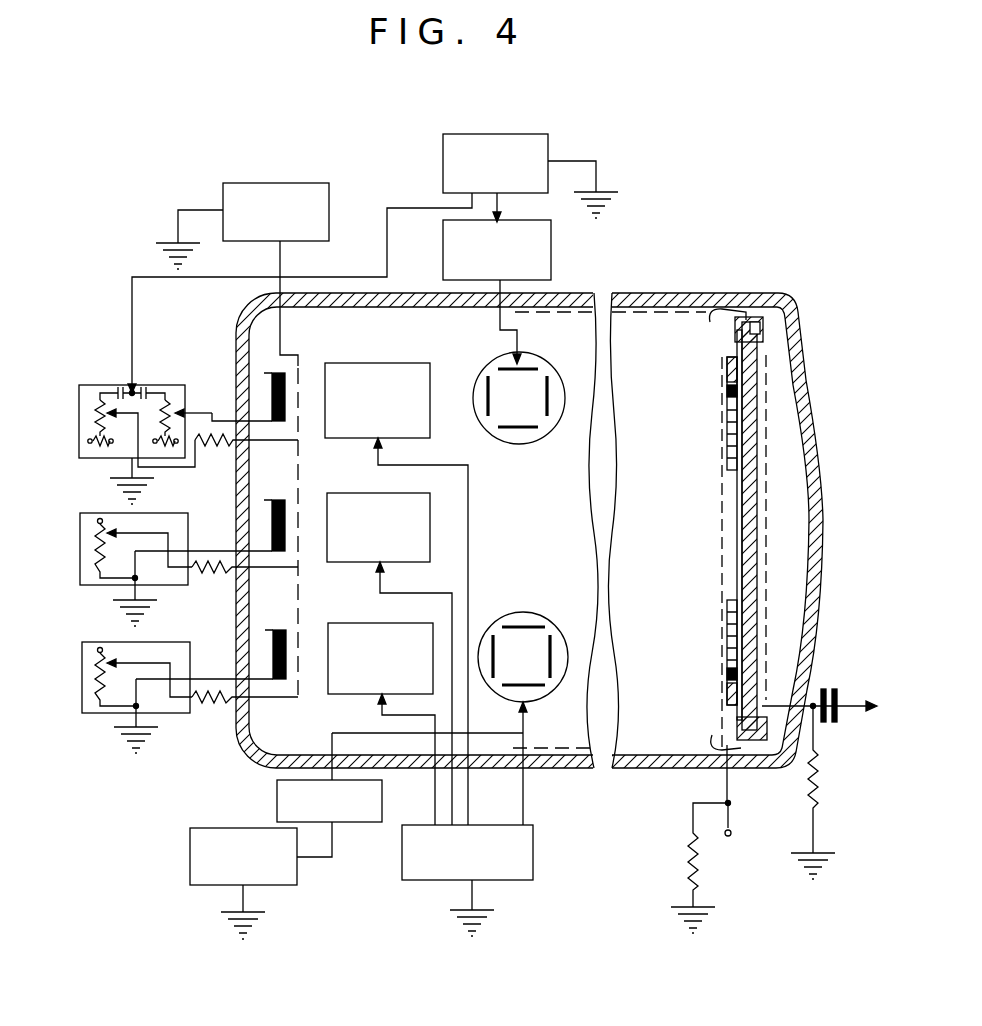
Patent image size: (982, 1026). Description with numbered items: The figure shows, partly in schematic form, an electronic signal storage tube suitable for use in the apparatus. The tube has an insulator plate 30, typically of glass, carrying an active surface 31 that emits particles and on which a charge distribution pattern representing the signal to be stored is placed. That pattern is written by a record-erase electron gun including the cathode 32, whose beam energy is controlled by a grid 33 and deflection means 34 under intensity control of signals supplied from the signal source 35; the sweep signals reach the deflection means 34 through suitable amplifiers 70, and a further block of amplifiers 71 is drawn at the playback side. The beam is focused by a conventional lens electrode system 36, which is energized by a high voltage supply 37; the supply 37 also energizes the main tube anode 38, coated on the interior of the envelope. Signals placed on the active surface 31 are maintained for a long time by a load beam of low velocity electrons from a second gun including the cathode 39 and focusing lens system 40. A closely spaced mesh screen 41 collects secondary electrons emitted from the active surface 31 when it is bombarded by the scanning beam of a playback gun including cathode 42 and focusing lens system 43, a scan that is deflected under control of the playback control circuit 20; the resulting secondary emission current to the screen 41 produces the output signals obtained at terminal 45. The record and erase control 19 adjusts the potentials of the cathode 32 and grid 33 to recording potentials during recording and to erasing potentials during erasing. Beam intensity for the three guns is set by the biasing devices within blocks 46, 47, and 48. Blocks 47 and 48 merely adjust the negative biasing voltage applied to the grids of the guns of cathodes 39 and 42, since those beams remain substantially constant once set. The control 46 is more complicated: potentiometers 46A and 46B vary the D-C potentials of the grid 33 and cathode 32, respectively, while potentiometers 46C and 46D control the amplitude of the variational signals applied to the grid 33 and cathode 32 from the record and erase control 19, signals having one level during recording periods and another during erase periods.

The record and erase control 19 is at (470, 134).
The playback control circuit 20 is at (223, 828).
The insulator plate 30 is at (750, 318).
The active surface 31 is at (742, 460).
The cathode 32 is at (272, 415).
The grid 33 is at (300, 366).
The deflection means 34 is at (547, 371).
The signal source 35 is at (255, 183).
The lens electrode system 36 is at (398, 363).
The high voltage supply 37 is at (432, 825).
The main tube anode 38 is at (530, 748).
The cathode 39 is at (272, 541).
The focusing lens system 40 is at (399, 493).
The screen 41 is at (727, 594).
The cathode 42 is at (275, 669).
The focusing lens system 43 is at (400, 623).
The terminal 45 is at (743, 823).
The biasing device 46 is at (165, 431).
The potentiometer 46A is at (95, 437).
The potentiometer 46B is at (160, 455).
The potentiometer 46C is at (97, 408).
The potentiometer 46D is at (172, 402).
The biasing device 47 is at (106, 513).
The biasing device 48 is at (108, 642).
The amplifiers 70 is at (515, 221).
The amplifiers 71 is at (277, 800).